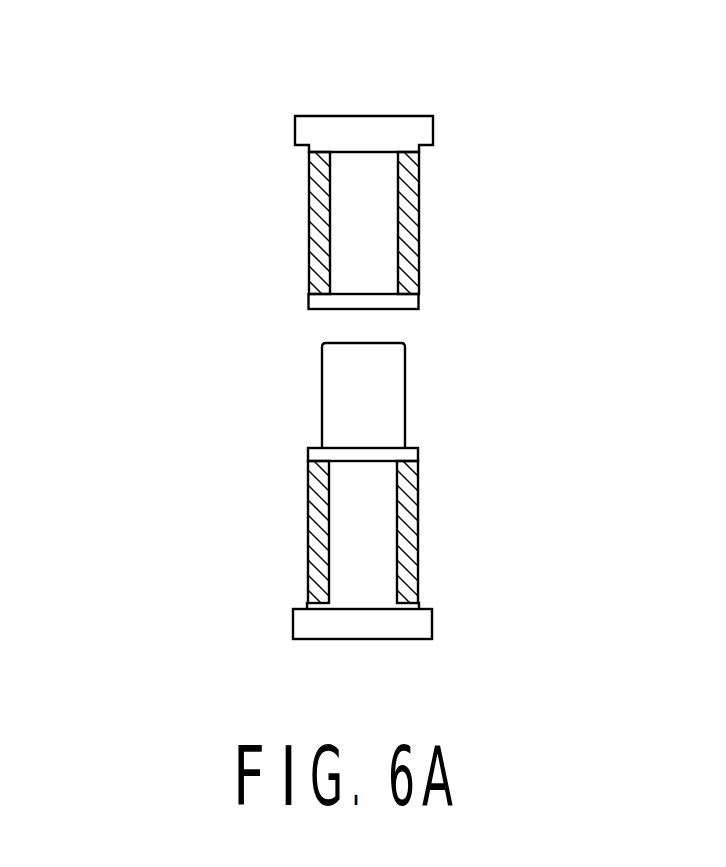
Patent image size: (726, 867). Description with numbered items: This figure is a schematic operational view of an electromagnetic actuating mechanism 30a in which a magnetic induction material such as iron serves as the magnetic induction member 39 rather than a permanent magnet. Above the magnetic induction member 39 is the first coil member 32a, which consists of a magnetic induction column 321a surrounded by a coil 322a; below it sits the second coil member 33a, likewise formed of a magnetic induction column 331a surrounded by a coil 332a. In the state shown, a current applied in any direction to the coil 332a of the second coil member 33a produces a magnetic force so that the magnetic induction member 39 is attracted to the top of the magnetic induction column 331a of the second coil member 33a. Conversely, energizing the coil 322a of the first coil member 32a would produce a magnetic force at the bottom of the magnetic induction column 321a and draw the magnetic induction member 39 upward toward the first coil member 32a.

The electromagnetic actuating mechanism 30a is at (240, 121).
The first coil member 32a is at (567, 92).
The magnetic induction column 321a is at (422, 130).
The coil 322a is at (401, 199).
The magnetic induction member 39 is at (397, 362).
The second coil member 33a is at (564, 477).
The magnetic induction column 331a is at (372, 540).
The coil 332a is at (412, 572).